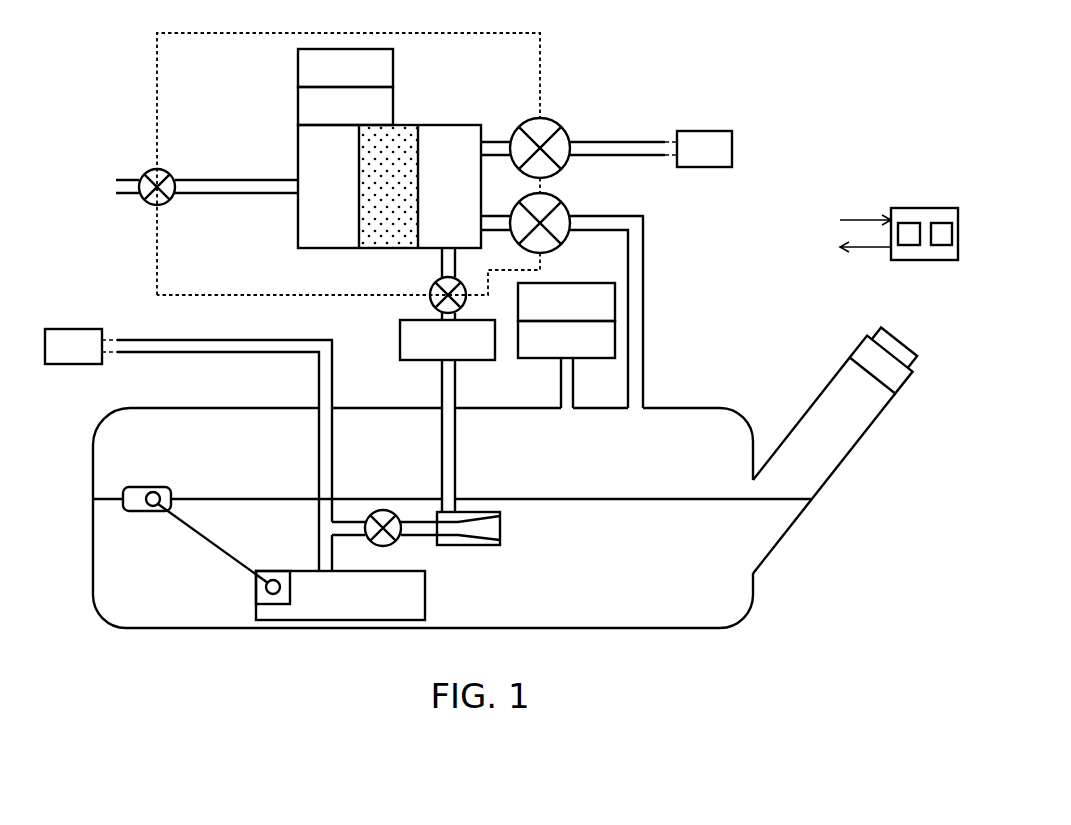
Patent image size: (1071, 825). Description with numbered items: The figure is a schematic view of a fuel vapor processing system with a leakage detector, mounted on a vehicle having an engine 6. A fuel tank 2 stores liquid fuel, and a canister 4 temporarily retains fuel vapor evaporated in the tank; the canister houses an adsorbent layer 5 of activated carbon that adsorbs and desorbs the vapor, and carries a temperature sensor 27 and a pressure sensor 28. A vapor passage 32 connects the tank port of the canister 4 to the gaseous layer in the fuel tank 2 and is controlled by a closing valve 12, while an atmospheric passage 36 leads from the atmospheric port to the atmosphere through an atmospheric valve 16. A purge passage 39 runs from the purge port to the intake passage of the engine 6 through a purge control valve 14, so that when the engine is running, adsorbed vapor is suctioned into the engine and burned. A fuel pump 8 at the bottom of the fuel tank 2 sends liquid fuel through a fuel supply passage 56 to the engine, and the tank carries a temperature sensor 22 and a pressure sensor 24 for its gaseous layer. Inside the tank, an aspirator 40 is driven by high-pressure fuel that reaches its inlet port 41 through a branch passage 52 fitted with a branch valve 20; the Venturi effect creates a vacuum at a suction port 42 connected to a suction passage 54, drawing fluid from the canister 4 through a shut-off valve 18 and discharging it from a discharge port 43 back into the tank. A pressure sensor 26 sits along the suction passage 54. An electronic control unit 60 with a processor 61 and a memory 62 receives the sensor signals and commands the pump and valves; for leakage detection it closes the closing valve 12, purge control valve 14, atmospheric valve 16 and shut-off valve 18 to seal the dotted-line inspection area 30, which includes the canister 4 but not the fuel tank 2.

The fuel tank 2 is at (725, 408).
The canister 4 is at (298, 232).
The adsorbent layer 5 is at (403, 132).
The engine 6 is at (717, 131).
The fuel pump 8 is at (425, 600).
The closing valve 12 is at (562, 200).
The purge control valve 14 is at (562, 125).
The atmospheric valve 16 is at (147, 173).
The shut-off valve 18 is at (437, 282).
The branch valve 20 is at (385, 510).
The temperature sensor 22 is at (615, 300).
The pressure sensor 24 is at (615, 338).
The pressure sensor 26 is at (400, 343).
The temperature sensor 27 is at (298, 68).
The pressure sensor 28 is at (298, 105).
The inspection area 30 is at (157, 57).
The vapor passage 32 is at (643, 237).
The atmospheric passage 36 is at (216, 196).
The purge passage 39 is at (631, 142).
The aspirator 40 is at (483, 524).
The inlet port 41 is at (430, 526).
The suction port 42 is at (447, 512).
The discharge port 43 is at (505, 535).
The branch passage 52 is at (346, 523).
The suction passage 54 is at (455, 386).
The fuel supply passage 56 is at (319, 455).
The electronic control unit 60 is at (901, 228).
The processor 61 is at (908, 245).
The memory 62 is at (940, 245).